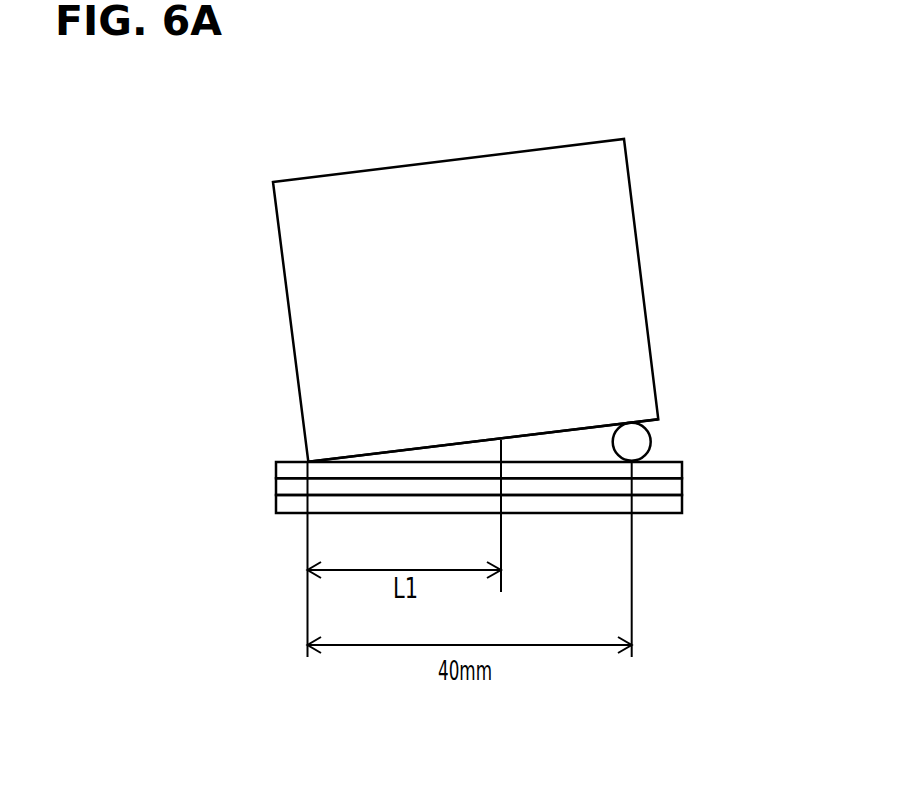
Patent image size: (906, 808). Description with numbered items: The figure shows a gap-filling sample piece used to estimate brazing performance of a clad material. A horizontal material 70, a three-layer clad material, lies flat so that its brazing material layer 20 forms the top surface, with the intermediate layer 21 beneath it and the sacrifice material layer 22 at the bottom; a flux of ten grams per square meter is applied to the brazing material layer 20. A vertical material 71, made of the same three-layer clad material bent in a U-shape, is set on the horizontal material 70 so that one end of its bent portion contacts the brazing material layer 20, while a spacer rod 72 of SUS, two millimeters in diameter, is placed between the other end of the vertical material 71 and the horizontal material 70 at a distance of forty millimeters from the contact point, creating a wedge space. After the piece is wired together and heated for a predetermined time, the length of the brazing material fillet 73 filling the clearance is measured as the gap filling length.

The brazing material layer 20 is at (673, 469).
The second layer of laminate 21 is at (674, 487).
The sacrifice material layer 22 is at (675, 503).
The horizontal material 70 is at (519, 508).
The vertical material 71 is at (618, 281).
The spacer rod 72 is at (640, 442).
The brazing material fillet 73 is at (473, 452).